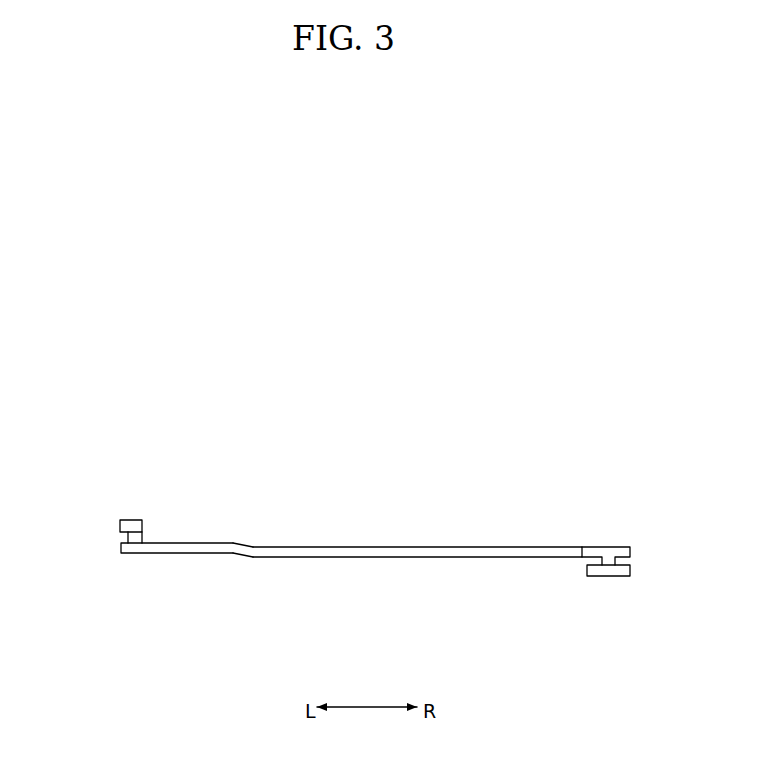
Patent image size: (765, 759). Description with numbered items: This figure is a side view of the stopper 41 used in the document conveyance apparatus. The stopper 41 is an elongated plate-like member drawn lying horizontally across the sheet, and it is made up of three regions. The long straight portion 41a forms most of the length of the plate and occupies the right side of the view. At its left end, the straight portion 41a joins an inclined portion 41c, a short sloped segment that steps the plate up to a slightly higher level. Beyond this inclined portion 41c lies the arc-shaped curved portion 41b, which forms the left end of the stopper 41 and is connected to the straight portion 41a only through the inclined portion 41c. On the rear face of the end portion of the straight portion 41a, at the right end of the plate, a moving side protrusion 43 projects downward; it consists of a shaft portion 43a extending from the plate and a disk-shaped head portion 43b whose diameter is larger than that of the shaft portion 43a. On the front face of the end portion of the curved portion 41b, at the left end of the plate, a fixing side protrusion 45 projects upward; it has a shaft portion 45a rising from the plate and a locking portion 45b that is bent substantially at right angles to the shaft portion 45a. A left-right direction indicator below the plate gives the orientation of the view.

The stopper 41 is at (351, 463).
The straight portion 41a is at (417, 547).
The curved portion 41b is at (177, 543).
The inclined portion 41c is at (240, 544).
The moving side protrusion 43 is at (643, 608).
The shaft portion 43a is at (615, 563).
The head portion 43b is at (618, 573).
The fixing side protrusion 45 is at (91, 494).
The shaft portion 45a is at (127, 538).
The locking portion 45b is at (120, 525).